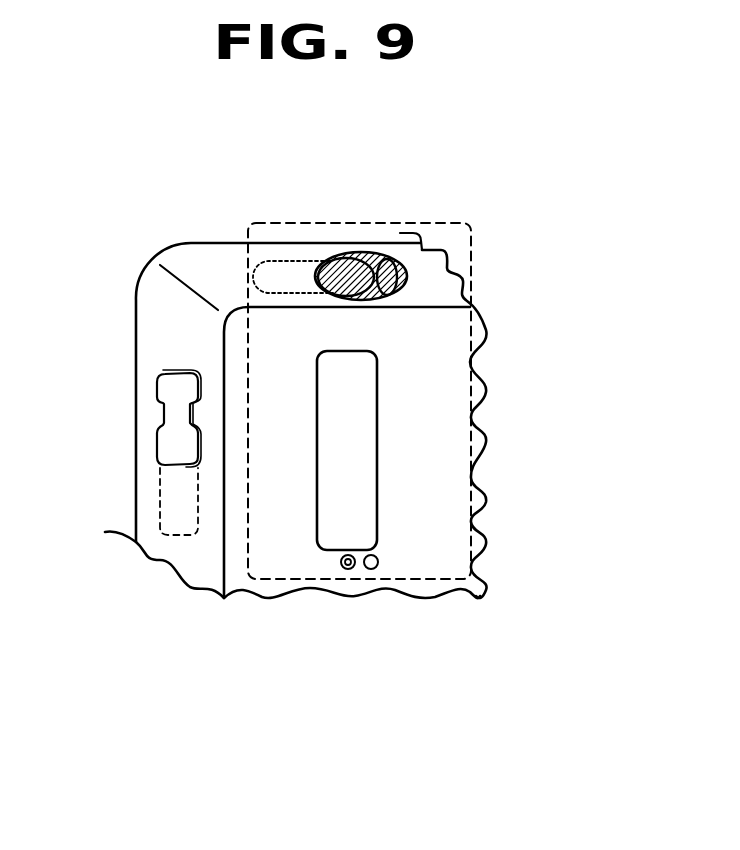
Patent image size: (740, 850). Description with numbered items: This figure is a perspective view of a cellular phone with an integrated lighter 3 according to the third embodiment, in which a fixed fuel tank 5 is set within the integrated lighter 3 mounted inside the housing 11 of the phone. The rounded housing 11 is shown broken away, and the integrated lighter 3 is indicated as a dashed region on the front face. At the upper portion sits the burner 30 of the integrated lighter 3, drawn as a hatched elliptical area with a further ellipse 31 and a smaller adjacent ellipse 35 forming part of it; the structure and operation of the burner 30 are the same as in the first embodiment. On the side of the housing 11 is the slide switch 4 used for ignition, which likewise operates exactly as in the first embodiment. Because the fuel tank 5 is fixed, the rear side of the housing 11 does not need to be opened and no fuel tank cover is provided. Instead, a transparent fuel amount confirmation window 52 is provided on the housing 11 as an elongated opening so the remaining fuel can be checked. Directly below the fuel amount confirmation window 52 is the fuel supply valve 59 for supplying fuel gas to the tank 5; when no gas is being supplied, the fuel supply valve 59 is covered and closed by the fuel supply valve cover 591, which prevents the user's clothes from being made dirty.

The housing 11 is at (162, 338).
The integrated lighter 3 is at (472, 287).
The fixed fuel tank 5 is at (448, 447).
The burner 30 is at (368, 265).
The lens 31 is at (343, 268).
The auxiliary lens / light 35 is at (405, 270).
The slide switch 4 is at (170, 436).
The fuel amount confirmation window 52 is at (334, 527).
The fuel supply valve 59 is at (351, 569).
The fuel supply valve cover 591 is at (375, 569).